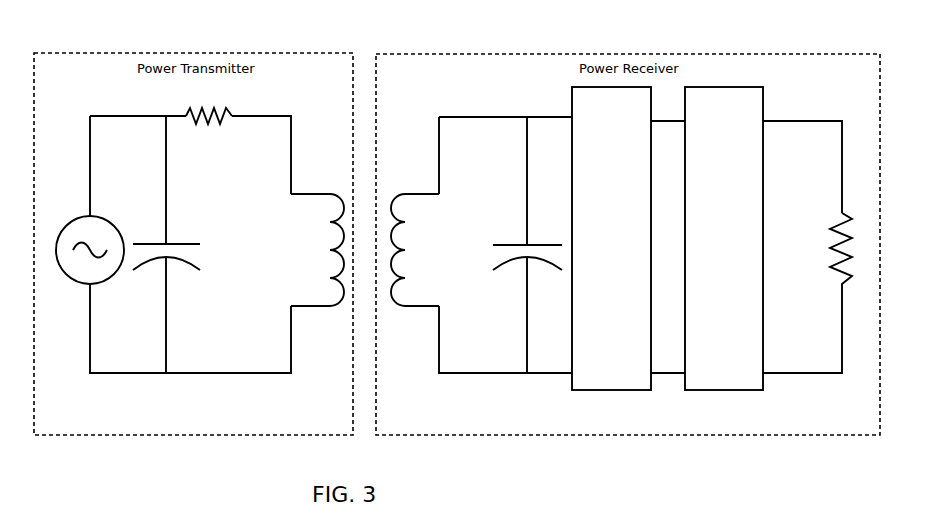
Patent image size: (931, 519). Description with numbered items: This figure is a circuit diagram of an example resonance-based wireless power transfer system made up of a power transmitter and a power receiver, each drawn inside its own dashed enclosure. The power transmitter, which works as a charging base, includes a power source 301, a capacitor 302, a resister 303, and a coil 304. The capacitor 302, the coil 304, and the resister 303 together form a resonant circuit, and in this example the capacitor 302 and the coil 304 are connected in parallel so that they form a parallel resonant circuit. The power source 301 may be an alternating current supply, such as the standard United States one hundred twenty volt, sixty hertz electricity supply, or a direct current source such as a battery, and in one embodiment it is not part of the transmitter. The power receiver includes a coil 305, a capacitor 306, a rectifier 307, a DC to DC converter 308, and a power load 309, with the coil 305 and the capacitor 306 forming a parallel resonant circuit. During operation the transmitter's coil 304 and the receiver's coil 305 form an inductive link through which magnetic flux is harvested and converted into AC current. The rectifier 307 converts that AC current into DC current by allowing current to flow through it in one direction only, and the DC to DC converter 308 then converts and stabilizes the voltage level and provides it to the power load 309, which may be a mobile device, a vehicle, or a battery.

The power source 301 is at (90, 250).
The capacitor 302 is at (166, 268).
The resister 303 is at (209, 123).
The coil 304 is at (317, 250).
The coil 305 is at (415, 250).
The capacitor 306 is at (527, 250).
The rectifier 307 is at (611, 238).
The DC to DC converter 308 is at (724, 238).
The power load 309 is at (823, 250).